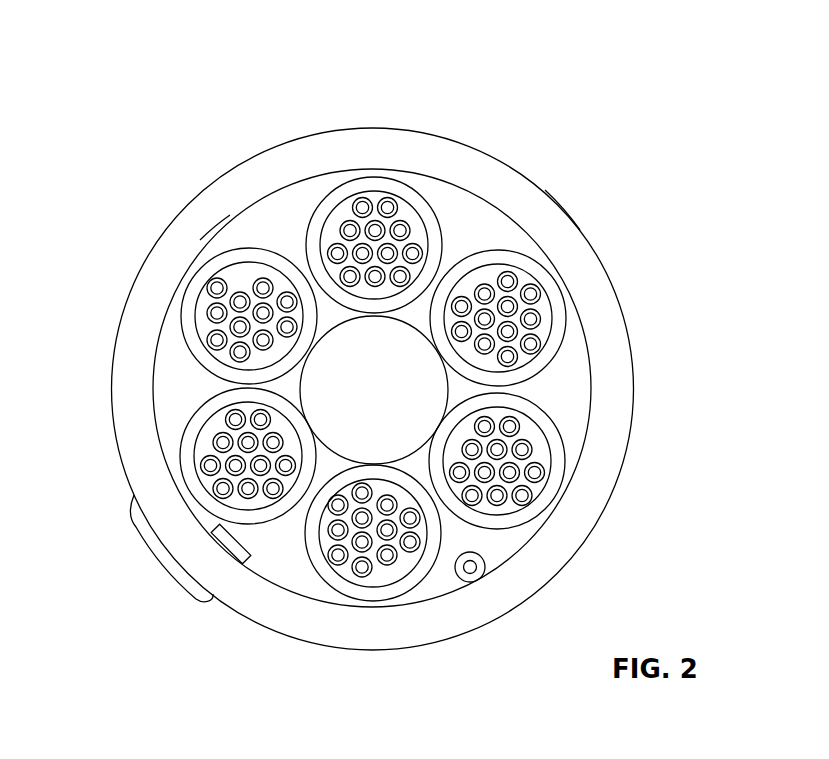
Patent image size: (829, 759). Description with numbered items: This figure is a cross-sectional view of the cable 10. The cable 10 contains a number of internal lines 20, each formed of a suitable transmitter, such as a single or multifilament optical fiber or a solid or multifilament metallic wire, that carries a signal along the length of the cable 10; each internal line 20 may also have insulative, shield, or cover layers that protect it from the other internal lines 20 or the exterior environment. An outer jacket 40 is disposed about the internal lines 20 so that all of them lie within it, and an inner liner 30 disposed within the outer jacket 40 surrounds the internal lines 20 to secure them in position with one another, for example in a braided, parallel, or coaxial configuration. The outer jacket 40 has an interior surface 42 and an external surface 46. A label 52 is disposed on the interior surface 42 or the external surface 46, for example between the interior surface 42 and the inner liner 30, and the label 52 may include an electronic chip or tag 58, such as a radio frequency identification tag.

The cable 10 is at (167, 62).
The internal lines 20 is at (284, 297).
The inner liner 30 is at (303, 198).
The outer jacket 40 is at (441, 122).
The interior surface 42 is at (206, 250).
The external surface 46 is at (561, 204).
The label 52 is at (163, 557).
The electronic tag 58 is at (243, 541).